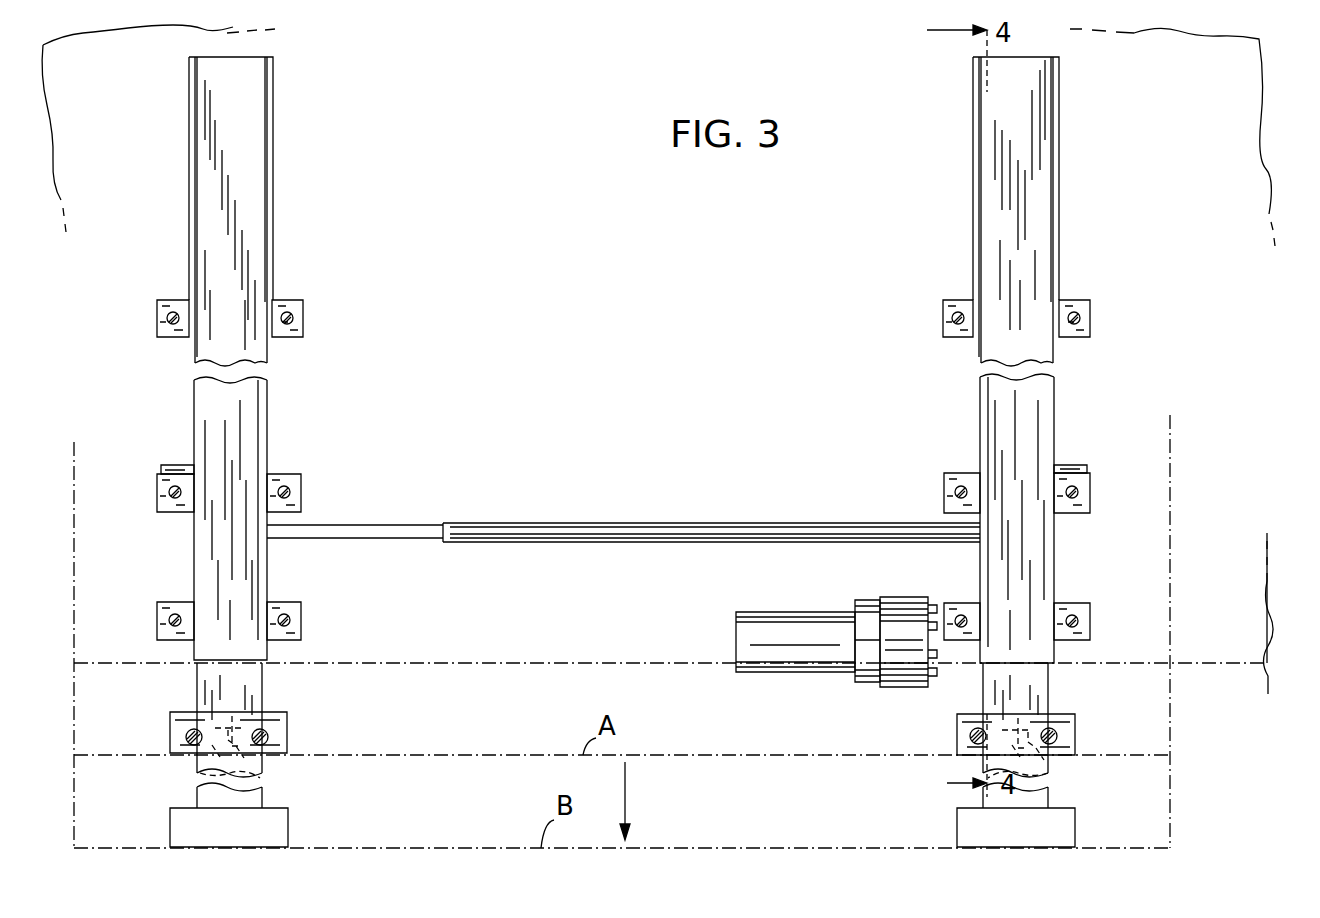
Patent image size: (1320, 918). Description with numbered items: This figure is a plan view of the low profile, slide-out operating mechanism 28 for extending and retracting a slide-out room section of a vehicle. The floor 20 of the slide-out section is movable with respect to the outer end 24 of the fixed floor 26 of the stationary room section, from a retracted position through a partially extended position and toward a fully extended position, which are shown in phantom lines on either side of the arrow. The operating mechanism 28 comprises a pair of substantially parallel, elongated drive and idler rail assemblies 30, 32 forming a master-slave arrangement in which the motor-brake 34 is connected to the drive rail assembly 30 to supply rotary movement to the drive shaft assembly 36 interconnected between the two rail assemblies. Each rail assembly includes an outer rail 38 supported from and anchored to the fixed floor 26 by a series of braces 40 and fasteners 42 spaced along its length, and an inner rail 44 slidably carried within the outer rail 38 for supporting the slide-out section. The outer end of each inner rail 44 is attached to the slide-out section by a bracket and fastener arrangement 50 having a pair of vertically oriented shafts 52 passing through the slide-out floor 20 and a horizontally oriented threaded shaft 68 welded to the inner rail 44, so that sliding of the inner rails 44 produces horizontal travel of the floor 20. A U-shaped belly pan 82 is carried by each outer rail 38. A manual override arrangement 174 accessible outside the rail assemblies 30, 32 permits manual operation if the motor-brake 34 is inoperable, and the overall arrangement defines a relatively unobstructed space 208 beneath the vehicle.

The floor 20 is at (1170, 714).
The outer end 24 is at (553, 663).
The fixed floor 26 is at (1250, 635).
The operating mechanism 28 is at (741, 277).
The drive rail assembly 30 is at (968, 427).
The idler rail assembly 32 is at (275, 447).
The motor-brake 34 is at (820, 635).
The drive shaft assembly 36 is at (640, 517).
The outer rail 38 is at (250, 421).
The brace 40 is at (300, 332).
The fastener 42 is at (174, 310).
The inner rail 44 is at (246, 683).
The bracket and fastener arrangement 50 is at (290, 712).
The vertically oriented shaft 52 is at (185, 736).
The horizontally oriented threaded shaft 68 is at (240, 775).
The belly pan 82 is at (275, 202).
The manual override arrangement 174 is at (185, 470).
The unobstructed space 208 is at (640, 348).